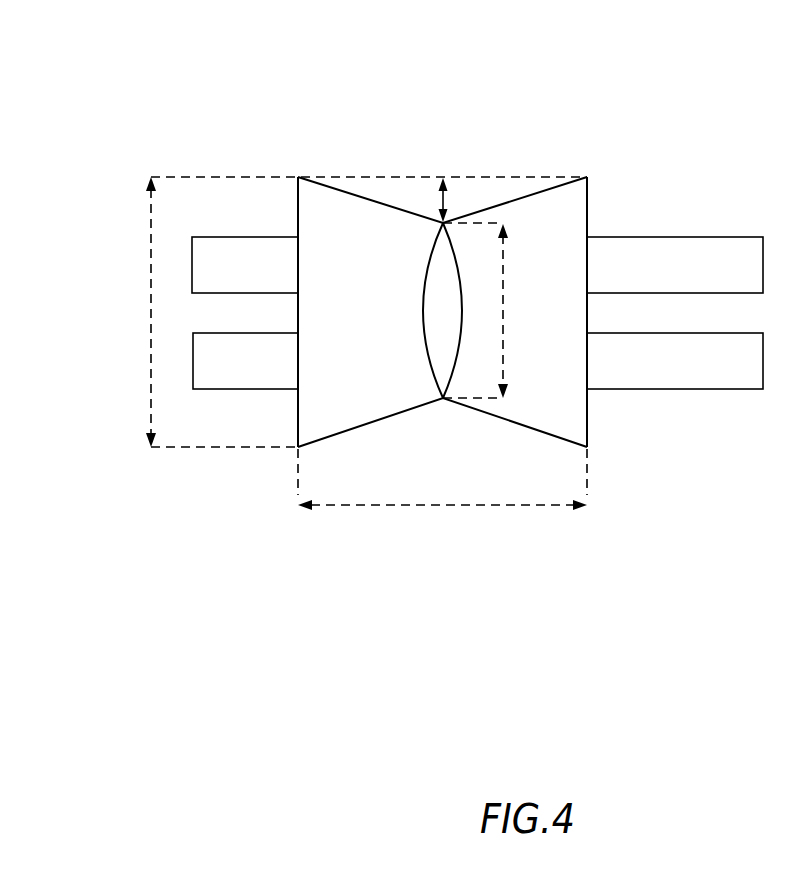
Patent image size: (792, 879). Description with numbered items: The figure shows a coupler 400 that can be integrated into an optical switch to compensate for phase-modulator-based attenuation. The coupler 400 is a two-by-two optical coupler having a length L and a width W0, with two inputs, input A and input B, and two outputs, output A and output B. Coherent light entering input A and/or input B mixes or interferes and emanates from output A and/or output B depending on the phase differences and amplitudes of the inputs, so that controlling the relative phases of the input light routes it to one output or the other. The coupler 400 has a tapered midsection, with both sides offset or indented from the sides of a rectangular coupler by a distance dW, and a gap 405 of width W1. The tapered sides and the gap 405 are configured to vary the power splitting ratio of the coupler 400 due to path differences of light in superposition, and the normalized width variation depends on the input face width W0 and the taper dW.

The coupler 400 is at (147, 78).
The gap 405 is at (412, 277).
The width W0 is at (343, 312).
The width of the gap W1 is at (490, 310).
The length L is at (442, 495).
The taper dW is at (455, 193).